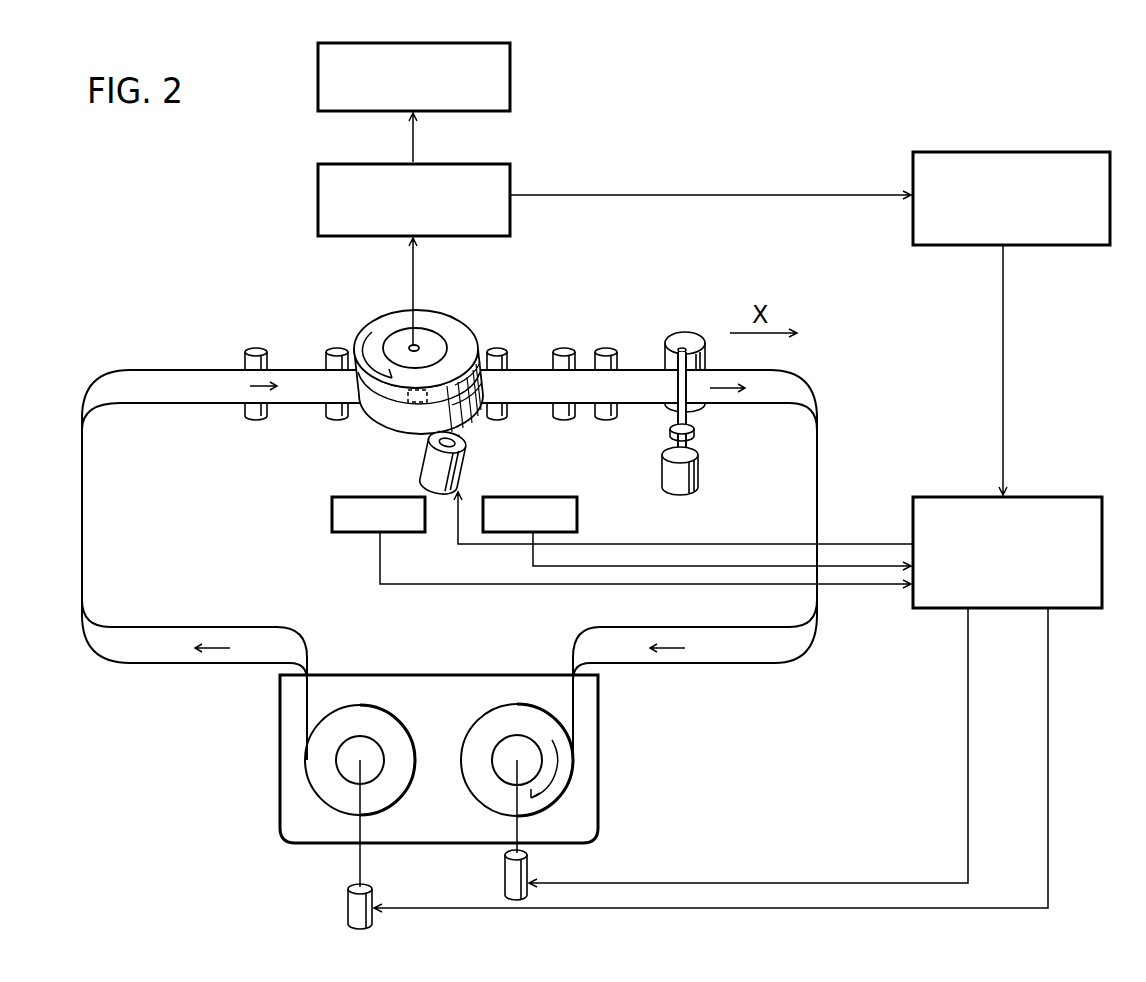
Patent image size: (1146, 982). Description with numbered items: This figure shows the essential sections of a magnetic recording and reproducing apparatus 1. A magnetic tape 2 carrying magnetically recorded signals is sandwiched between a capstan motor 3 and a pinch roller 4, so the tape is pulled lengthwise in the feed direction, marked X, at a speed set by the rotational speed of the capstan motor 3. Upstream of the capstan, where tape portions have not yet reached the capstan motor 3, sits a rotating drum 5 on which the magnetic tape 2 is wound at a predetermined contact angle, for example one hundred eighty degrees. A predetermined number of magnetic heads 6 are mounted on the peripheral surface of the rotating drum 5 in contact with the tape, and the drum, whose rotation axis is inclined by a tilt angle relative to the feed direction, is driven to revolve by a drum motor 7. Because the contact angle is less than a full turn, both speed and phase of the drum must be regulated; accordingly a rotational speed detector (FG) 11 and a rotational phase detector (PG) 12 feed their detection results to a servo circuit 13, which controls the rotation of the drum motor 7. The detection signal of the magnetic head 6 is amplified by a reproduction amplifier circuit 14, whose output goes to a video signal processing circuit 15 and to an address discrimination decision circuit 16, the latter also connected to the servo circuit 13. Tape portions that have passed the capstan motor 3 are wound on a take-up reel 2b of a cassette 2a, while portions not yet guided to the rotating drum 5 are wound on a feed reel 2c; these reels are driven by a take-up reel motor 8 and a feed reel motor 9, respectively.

The magnetic recording and reproducing apparatus 1 is at (810, 110).
The magnetic tape 2 is at (818, 463).
The cassette 2a is at (600, 797).
The take-up reel 2b is at (570, 765).
The feed reel 2c is at (312, 742).
The capstan motor 3 is at (699, 473).
The pinch roller 4 is at (672, 334).
The rotating drum 5 is at (468, 333).
The magnetic head 6 is at (404, 410).
The drum motor 7 is at (472, 470).
The take-up reel motor 8 is at (505, 880).
The feed reel motor 9 is at (348, 898).
The rotational speed detector (FG) 11 is at (577, 518).
The rotational phase detector (PG) 12 is at (332, 516).
The servo circuit 13 is at (1035, 497).
The reproduction amplifier circuit 14 is at (318, 196).
The video signal processing circuit 15 is at (318, 80).
The address discrimination decision circuit 16 is at (1010, 152).